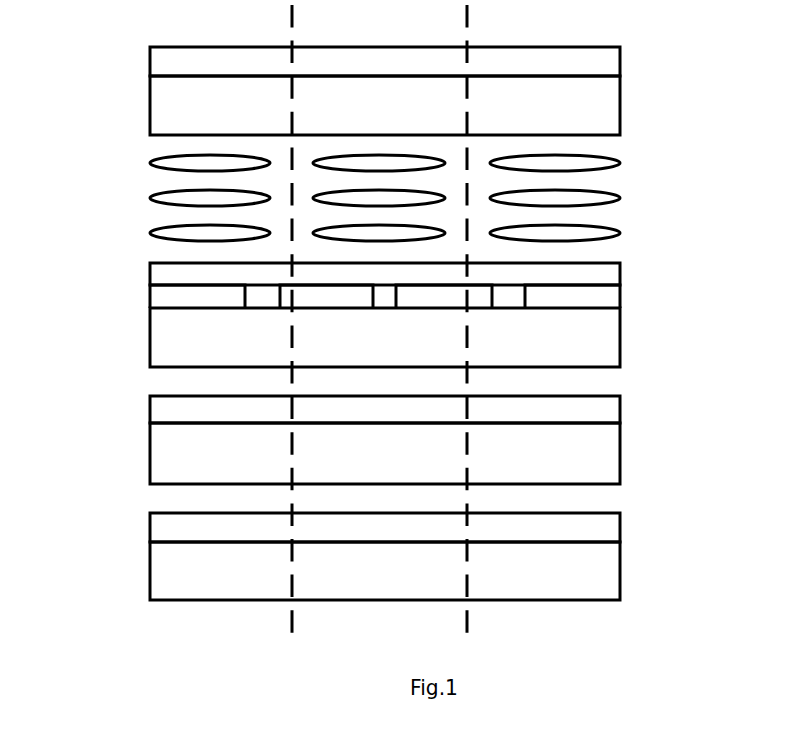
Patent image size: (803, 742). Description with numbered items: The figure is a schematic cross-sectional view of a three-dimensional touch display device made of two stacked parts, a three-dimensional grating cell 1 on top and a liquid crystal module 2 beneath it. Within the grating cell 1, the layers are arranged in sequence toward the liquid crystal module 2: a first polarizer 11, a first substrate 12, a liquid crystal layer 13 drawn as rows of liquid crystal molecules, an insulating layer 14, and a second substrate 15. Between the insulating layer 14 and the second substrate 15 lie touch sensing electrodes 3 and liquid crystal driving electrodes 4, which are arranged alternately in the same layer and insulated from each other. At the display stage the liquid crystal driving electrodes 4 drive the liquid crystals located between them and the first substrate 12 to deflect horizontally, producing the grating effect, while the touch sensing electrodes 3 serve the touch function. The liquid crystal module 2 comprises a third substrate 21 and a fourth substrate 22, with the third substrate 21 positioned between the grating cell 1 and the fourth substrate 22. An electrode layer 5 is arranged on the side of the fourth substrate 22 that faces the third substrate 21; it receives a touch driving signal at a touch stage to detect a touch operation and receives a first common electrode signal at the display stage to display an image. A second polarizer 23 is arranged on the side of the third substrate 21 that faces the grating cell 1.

The 3D grating cell 1 is at (90, 47).
The liquid crystal module 2 is at (90, 400).
The touch sensing electrodes 3 is at (150, 290).
The liquid crystal driving electrodes 4 is at (328, 297).
The electrode layer 5 is at (620, 524).
The first polarizer 11 is at (620, 52).
The first substrate 12 is at (620, 105).
The liquid crystal layer 13 is at (623, 152).
The insulating layer 14 is at (620, 265).
The second substrate 15 is at (620, 357).
The third substrate 21 is at (620, 463).
The fourth substrate 22 is at (620, 571).
The second polarizer 23 is at (620, 410).